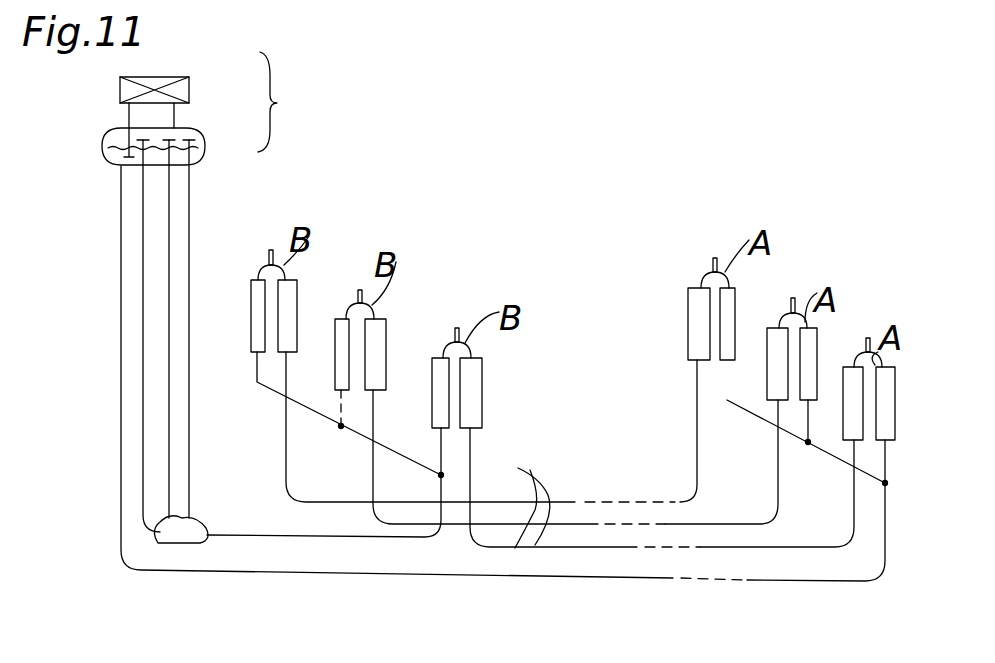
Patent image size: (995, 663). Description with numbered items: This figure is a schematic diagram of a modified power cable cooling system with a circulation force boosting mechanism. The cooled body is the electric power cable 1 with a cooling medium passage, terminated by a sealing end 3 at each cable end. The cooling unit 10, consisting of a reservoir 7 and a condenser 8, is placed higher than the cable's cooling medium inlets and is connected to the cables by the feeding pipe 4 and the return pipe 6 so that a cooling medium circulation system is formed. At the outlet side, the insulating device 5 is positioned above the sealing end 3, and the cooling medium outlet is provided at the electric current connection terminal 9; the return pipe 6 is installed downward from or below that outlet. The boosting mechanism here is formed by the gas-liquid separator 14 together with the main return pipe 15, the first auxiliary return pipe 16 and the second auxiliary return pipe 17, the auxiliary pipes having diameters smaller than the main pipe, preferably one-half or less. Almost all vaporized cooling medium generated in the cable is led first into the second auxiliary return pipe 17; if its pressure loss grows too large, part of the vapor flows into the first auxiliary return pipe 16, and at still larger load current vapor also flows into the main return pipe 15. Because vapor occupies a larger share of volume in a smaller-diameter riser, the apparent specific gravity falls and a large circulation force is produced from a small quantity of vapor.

The electric power cable 1 is at (507, 480).
The sealing end 3 is at (297, 302).
The feeding pipe 4 is at (478, 580).
The insulating device 5 is at (251, 342).
The return pipe 6 is at (258, 497).
The reservoir 7 is at (207, 140).
The condenser 8 is at (190, 92).
The electric current connection terminal 9 is at (271, 249).
The cooling unit 10 is at (290, 102).
The gas-liquid separator 14 is at (205, 518).
The main return pipe 15 is at (143, 275).
The first auxiliary return pipe 16 is at (169, 312).
The second auxiliary return pipe 17 is at (189, 424).